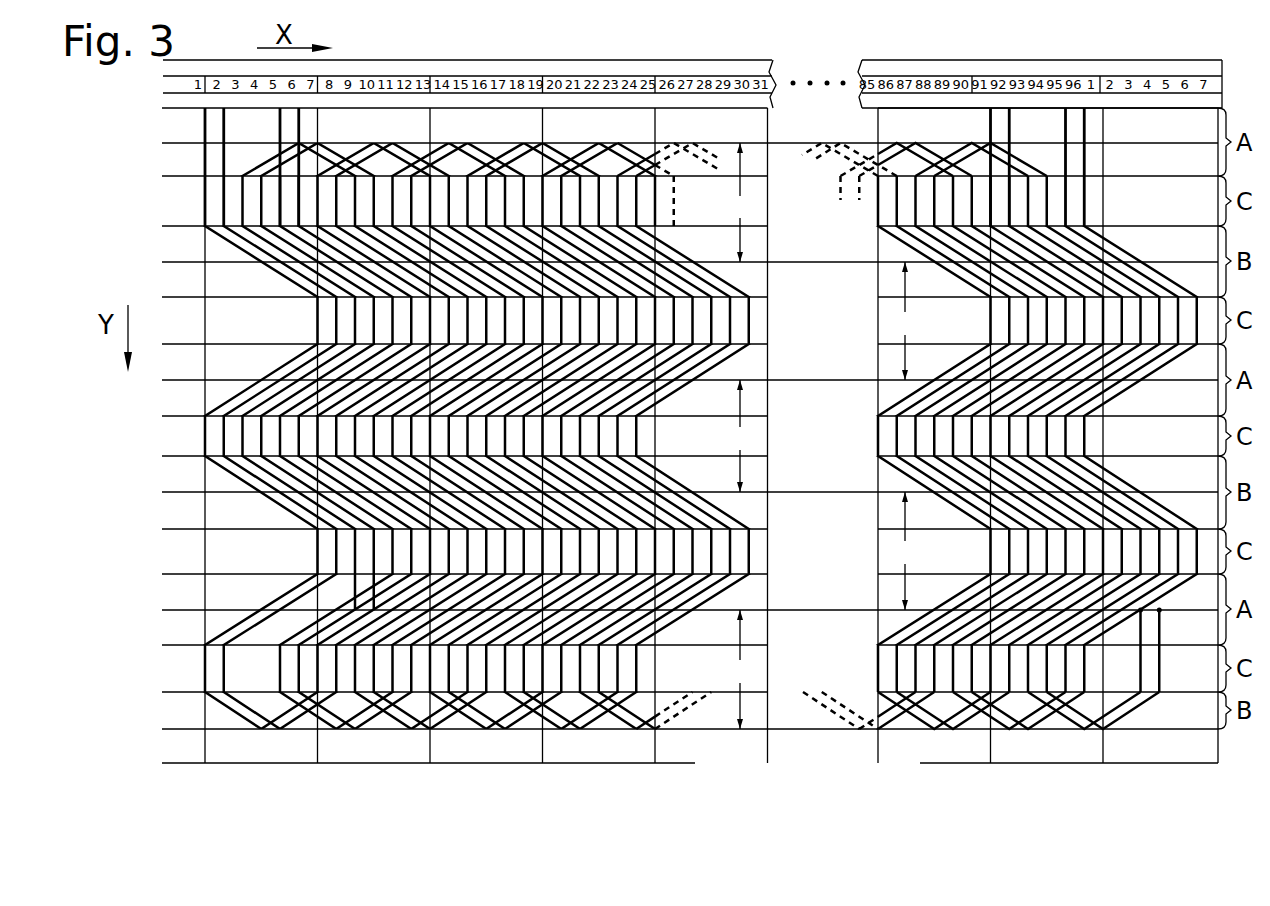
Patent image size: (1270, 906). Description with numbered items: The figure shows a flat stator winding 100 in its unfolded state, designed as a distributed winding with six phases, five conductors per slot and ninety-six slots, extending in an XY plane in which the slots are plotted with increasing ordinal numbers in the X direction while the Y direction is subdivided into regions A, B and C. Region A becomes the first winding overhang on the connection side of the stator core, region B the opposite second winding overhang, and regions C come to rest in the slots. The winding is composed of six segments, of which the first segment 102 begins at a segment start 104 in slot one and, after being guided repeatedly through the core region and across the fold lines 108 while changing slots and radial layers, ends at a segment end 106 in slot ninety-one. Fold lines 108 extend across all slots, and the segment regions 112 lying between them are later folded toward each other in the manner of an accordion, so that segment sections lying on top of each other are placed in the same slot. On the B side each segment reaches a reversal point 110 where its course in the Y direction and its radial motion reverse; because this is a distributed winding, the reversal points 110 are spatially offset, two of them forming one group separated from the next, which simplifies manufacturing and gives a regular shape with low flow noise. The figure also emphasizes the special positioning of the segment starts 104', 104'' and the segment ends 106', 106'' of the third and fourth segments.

The stator winding 100 is at (220, 298).
The first segment 102 is at (205, 206).
The segment start 104 is at (159, 162).
The segment start 104' is at (234, 590).
The segment start 104'' is at (225, 572).
The segment end 106 is at (1012, 127).
The segment end 106' is at (1125, 706).
The segment end 106'' is at (1182, 706).
The fold line 108 is at (786, 262).
The reversal point 110 is at (374, 143).
The segment region 112 is at (822, 436).